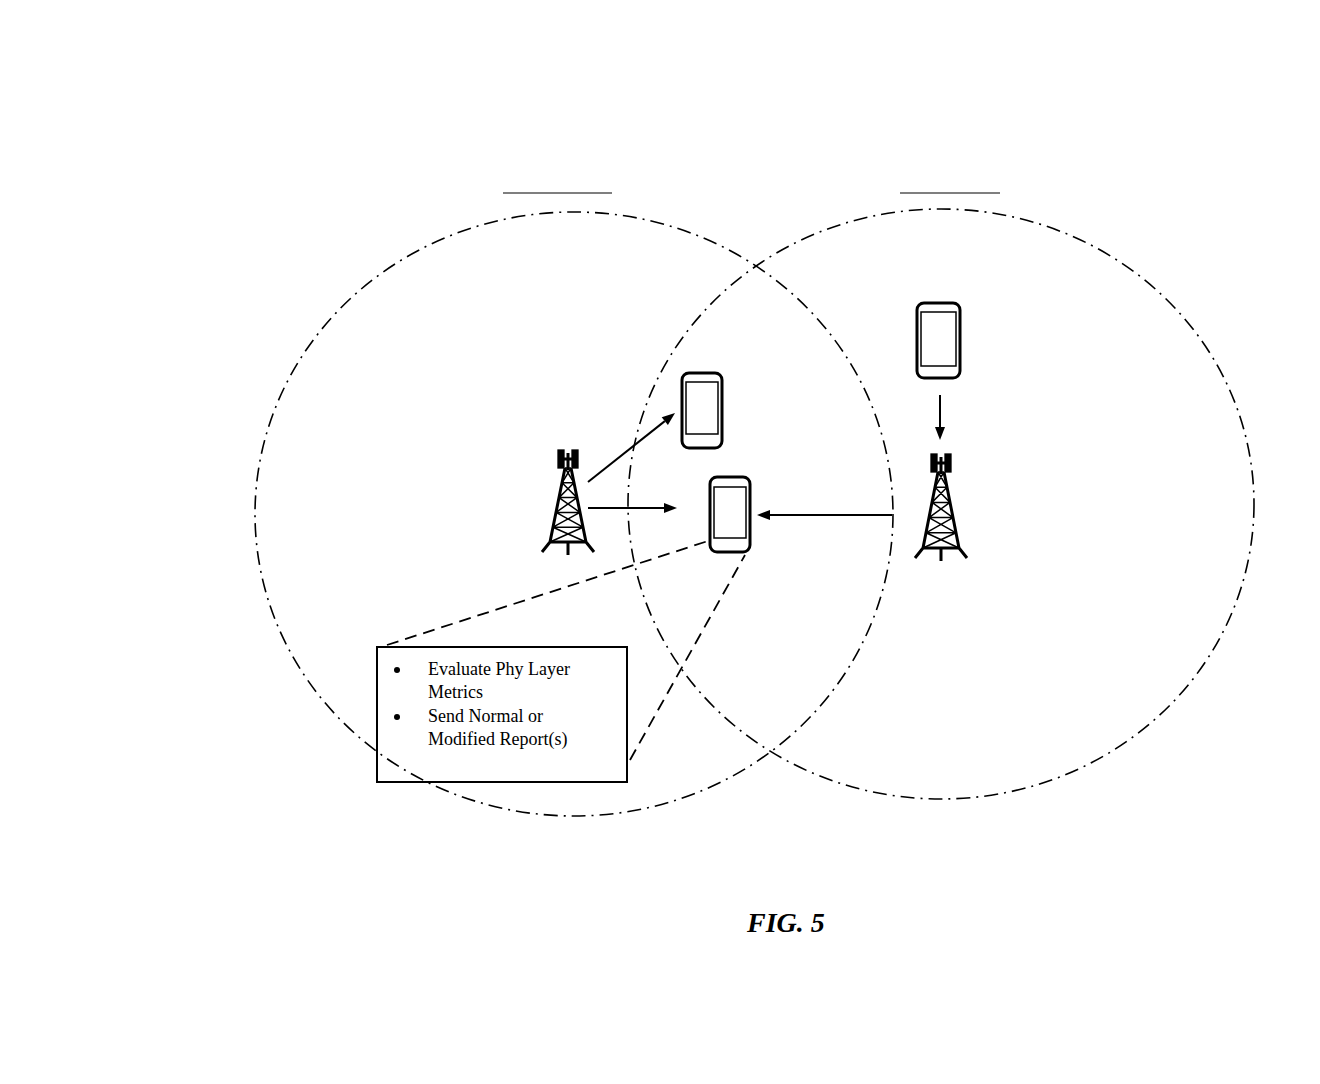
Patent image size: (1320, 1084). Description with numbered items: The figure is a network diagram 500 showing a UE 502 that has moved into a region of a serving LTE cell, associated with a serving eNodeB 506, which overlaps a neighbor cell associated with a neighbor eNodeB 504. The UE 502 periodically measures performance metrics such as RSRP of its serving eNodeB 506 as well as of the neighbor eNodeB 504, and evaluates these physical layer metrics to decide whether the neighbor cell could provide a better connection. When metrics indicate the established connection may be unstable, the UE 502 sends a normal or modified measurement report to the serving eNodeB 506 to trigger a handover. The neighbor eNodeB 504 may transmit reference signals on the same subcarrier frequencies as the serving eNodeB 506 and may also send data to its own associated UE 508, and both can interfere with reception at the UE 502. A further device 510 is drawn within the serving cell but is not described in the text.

The network diagram 500 is at (216, 103).
The UE 502 is at (750, 497).
The neighbor eNodeB 504 is at (560, 490).
The serving eNodeB 506 is at (951, 504).
The UE associated with neighbor eNodeB 508 is at (722, 392).
The user equipment in serving cell 510 is at (960, 323).